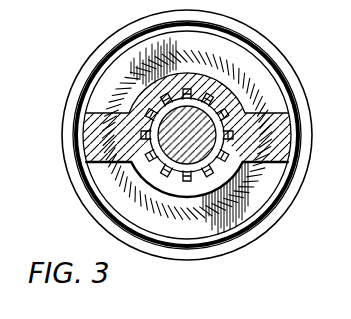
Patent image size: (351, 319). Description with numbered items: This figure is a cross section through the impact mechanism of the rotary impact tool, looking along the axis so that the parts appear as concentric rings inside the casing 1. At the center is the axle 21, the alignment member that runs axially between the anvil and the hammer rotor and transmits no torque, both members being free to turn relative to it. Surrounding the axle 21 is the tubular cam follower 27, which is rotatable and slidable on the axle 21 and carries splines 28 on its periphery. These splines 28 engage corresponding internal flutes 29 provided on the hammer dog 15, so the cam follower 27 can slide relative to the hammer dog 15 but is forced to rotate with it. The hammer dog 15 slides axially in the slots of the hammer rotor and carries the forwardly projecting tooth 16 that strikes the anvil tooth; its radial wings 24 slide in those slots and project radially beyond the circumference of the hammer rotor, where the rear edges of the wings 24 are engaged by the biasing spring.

The casing 1 is at (300, 102).
The hammer dog 15 is at (192, 186).
The tooth 16 is at (60, 148).
The axle 21 is at (223, 167).
The radial wings 24 is at (128, 112).
The tubular cam follower 27 is at (152, 181).
The splines 28 is at (207, 99).
The internal flutes 29 is at (234, 95).